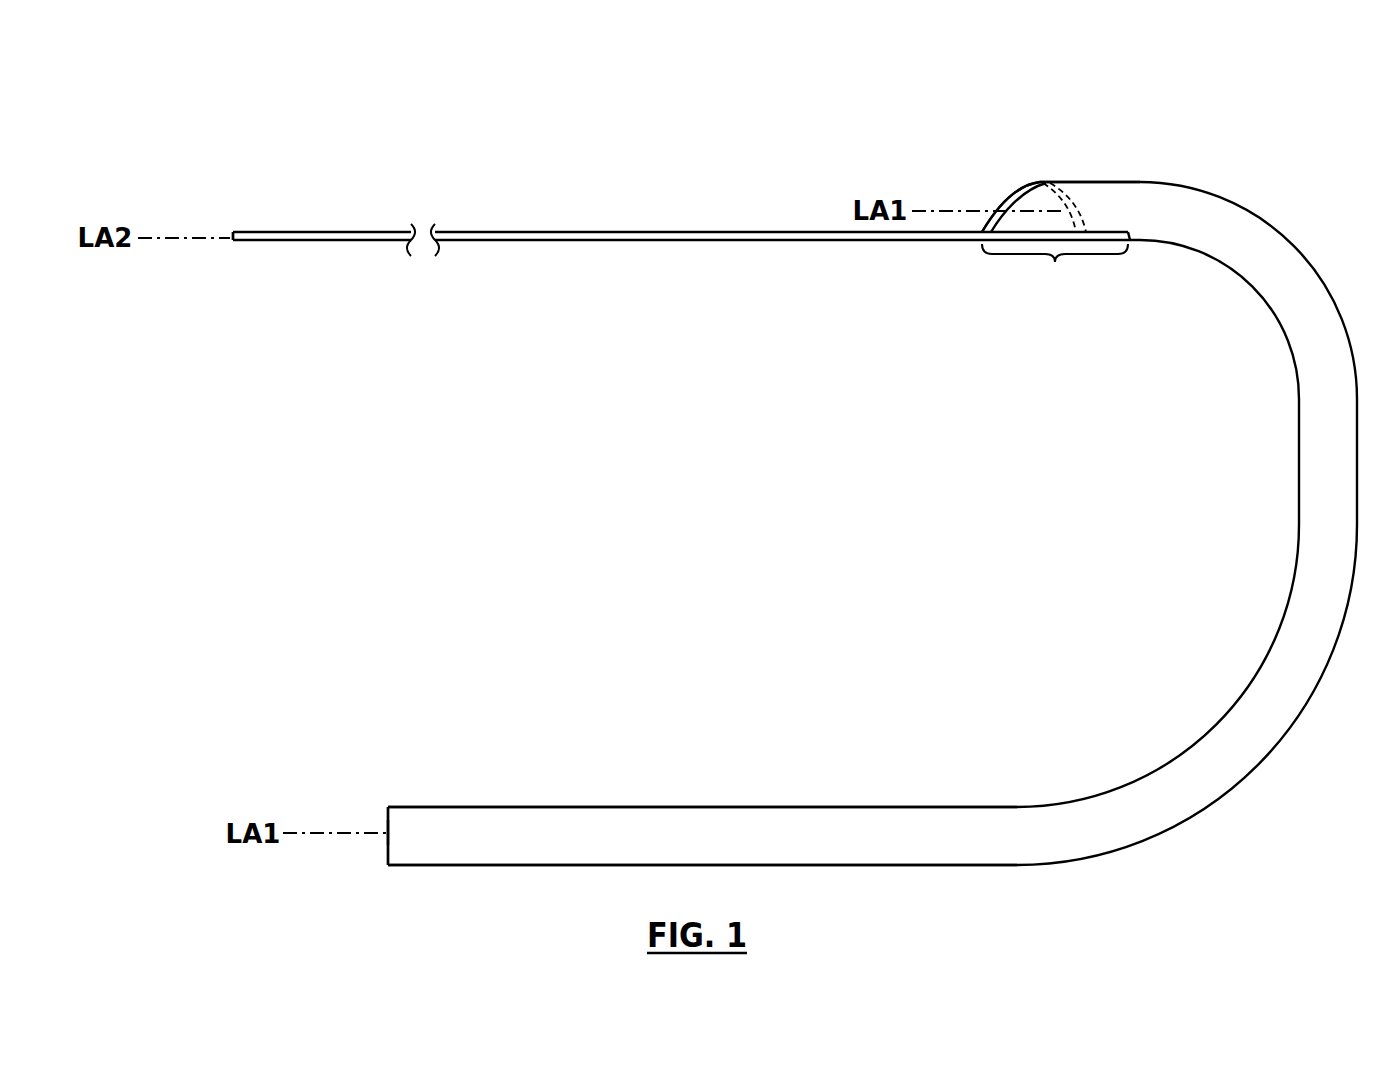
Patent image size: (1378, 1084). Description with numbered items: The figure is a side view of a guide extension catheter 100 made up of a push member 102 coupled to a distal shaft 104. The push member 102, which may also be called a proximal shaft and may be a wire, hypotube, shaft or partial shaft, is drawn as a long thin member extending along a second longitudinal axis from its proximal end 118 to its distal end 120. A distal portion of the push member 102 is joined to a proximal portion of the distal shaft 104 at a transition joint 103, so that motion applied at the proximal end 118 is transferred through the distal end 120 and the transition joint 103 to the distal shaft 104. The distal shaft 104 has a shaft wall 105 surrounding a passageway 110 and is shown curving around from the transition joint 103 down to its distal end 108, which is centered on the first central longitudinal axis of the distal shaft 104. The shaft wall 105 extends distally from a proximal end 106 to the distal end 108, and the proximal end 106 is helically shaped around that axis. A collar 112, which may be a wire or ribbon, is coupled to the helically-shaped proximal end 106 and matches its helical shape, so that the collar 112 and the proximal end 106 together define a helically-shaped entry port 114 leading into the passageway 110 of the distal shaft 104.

The guide extension catheter 100 is at (700, 128).
The push member 102 is at (575, 248).
The transition joint 103 is at (1055, 274).
The distal shaft 104 is at (767, 798).
The shaft wall 105 is at (1130, 182).
The proximal end 106 is at (1040, 182).
The distal end 108 is at (388, 805).
The passageway 110 is at (380, 822).
The collar 112 is at (1006, 198).
The entry port 114 is at (1019, 172).
The proximal end 118 is at (233, 242).
The distal end 120 is at (1133, 245).